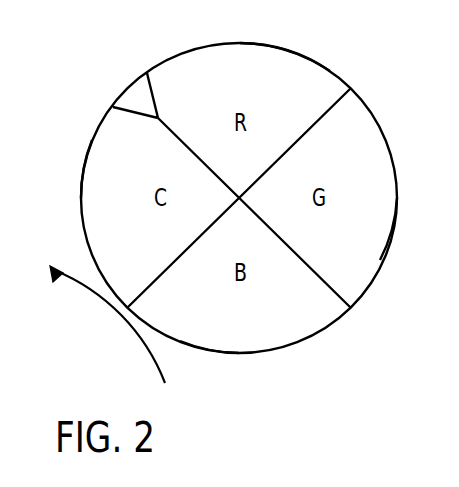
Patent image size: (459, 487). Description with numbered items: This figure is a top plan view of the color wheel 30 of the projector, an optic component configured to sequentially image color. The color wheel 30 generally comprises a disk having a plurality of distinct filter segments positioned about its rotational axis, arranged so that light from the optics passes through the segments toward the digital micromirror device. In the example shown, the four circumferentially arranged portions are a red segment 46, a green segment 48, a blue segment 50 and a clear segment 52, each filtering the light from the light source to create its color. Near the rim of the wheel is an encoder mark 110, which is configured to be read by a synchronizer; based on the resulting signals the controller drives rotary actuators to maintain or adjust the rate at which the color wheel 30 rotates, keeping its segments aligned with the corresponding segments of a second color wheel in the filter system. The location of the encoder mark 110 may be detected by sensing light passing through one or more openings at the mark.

The color wheel 30 is at (93, 96).
The red segment 46 is at (263, 43).
The green segment 48 is at (397, 190).
The blue segment 50 is at (256, 352).
The clear segment 52 is at (82, 190).
The encoder mark 110 is at (153, 93).